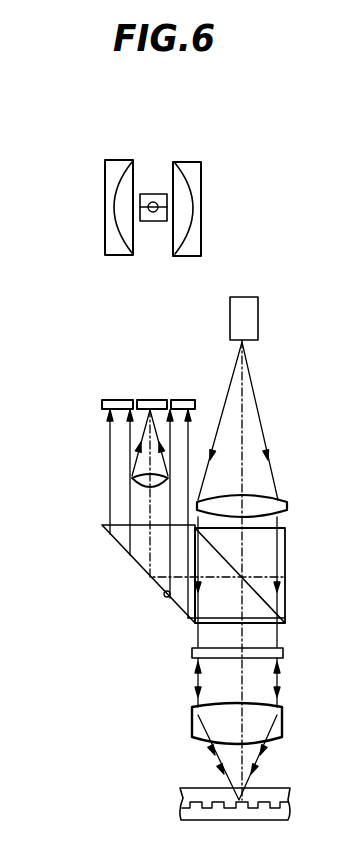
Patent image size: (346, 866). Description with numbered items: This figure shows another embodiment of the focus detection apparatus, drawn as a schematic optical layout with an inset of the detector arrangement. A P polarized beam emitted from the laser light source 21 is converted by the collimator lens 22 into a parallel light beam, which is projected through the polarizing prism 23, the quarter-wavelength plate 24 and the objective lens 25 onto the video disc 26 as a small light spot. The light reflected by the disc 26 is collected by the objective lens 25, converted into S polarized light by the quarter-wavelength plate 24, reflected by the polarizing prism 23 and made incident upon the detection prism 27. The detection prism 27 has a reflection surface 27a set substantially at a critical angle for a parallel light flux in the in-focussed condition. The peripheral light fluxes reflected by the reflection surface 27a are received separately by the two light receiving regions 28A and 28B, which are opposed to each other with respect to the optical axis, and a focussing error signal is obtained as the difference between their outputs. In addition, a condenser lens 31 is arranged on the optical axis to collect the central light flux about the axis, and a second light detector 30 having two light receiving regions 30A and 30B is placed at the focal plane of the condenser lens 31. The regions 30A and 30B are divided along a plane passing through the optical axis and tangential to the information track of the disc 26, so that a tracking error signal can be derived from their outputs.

The laser light source 21 is at (253, 322).
The collimator lens 22 is at (285, 503).
The polarizing prism 23 is at (287, 580).
The quarter-wavelength plate 24 is at (283, 653).
The objective lens 25 is at (283, 728).
The video disc 26 is at (270, 788).
The detection prism 27 is at (138, 550).
The reflection surface 27a is at (164, 595).
The light receiving region 28A is at (190, 167).
The light receiving region 28B is at (118, 167).
The second light detector 30 is at (155, 222).
The light receiving region 30A is at (165, 200).
The light receiving region 30B is at (166, 215).
The condenser lens 31 is at (132, 478).